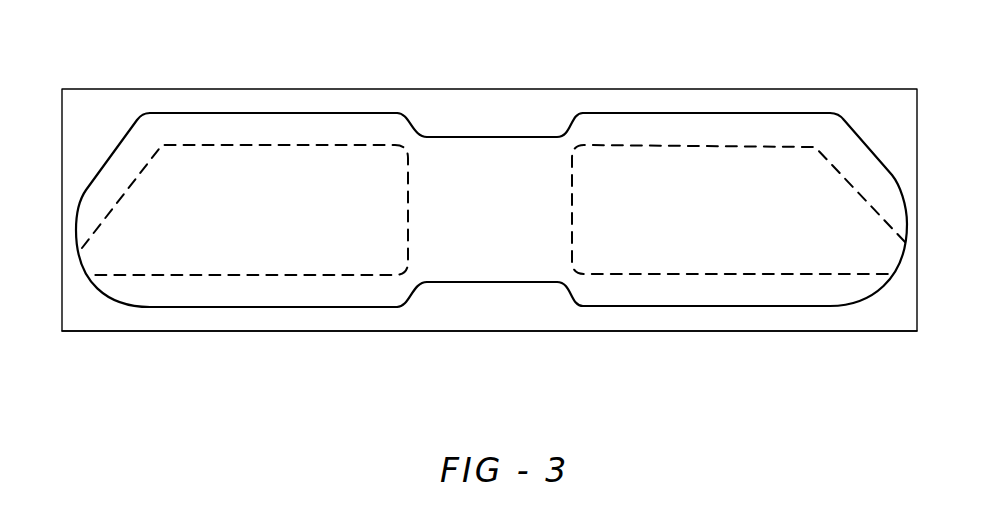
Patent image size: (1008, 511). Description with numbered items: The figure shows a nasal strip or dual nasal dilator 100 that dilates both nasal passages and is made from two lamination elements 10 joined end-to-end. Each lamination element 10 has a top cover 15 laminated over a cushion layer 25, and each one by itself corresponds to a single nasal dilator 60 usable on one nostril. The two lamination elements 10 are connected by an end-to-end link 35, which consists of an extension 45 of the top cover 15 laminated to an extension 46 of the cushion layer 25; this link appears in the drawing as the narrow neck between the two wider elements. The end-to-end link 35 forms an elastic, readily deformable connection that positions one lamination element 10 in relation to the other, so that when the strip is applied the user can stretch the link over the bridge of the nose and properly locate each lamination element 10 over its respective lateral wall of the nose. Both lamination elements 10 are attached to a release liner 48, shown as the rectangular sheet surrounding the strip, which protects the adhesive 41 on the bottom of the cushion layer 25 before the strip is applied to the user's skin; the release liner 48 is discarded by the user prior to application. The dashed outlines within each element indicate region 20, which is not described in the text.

The lamination element 10 is at (300, 108).
The top cover 15 is at (378, 125).
The lobe region 20 is at (253, 160).
The cushion layer 25 is at (187, 308).
The end-to-end link 35 is at (510, 153).
The adhesive 41 is at (363, 310).
The extension of top cover 45 is at (498, 263).
The extension of cushion layer 46 is at (538, 282).
The release liner 48 is at (282, 322).
The nasal dilator 60 is at (180, 132).
The dual nasal dilator 100 is at (397, 128).